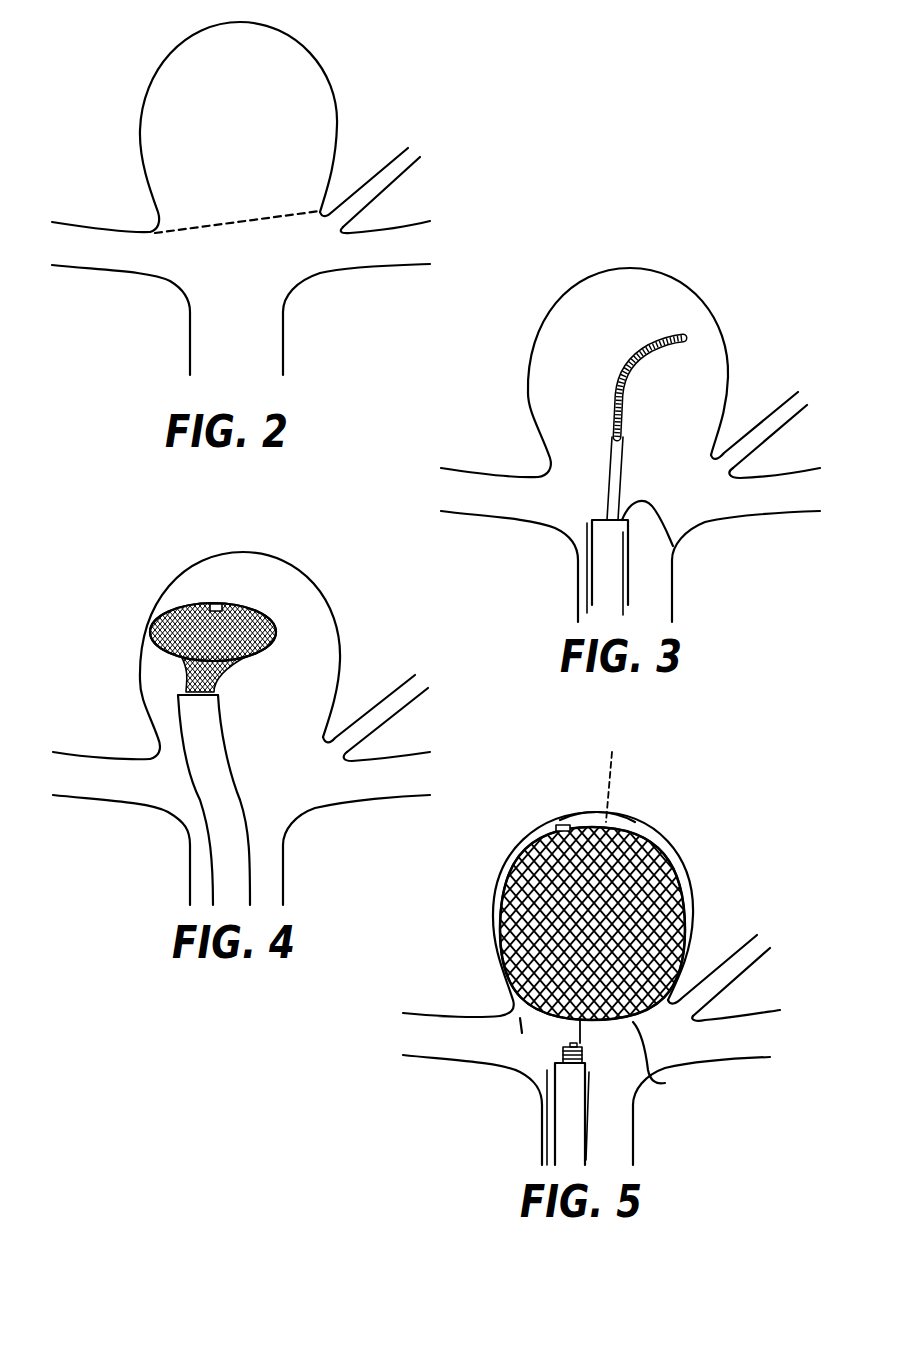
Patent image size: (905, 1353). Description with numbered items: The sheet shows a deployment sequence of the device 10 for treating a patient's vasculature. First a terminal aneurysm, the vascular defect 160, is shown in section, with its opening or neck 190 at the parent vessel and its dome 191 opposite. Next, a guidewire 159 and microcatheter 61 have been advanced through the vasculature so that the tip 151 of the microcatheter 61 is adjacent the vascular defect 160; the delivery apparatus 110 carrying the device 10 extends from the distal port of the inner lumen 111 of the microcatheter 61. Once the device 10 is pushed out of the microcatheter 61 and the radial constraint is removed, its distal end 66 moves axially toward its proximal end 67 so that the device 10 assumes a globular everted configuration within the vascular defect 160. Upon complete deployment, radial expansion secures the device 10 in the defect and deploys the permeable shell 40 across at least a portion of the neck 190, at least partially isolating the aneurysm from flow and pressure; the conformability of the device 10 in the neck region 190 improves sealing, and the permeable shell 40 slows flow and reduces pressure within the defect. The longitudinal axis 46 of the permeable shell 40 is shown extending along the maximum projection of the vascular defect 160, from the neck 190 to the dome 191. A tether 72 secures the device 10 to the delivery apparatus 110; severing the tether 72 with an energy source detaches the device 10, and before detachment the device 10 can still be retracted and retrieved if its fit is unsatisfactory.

In FIG. 4, the device 10 is at (273, 637).
In FIG. 5, the device 10 is at (502, 868).
In FIG. 4, the permeable shell 40 is at (263, 668).
In FIG. 5, the permeable shell 40 is at (502, 913).
In FIG. 5, the longitudinal axis 46 is at (613, 770).
In FIG. 3, the microcatheter 61 is at (592, 587).
In FIG. 4, the microcatheter 61 is at (250, 850).
In FIG. 5, the microcatheter 61 is at (557, 1132).
In FIG. 4, the distal end 66 is at (217, 609).
In FIG. 5, the distal end 66 is at (563, 828).
In FIG. 5, the proximal end 67 is at (665, 1083).
In FIG. 5, the tether 72 is at (582, 1050).
In FIG. 5, the delivery apparatus 110 is at (585, 1055).
In FIG. 3, the inner lumen 111 is at (673, 546).
In FIG. 3, the tip 151 is at (610, 568).
In FIG. 5, the tip 151 is at (572, 1113).
In FIG. 3, the guidewire 159 is at (627, 402).
In FIG. 2, the vascular defect 160 is at (338, 120).
In FIG. 3, the vascular defect 160 is at (727, 363).
In FIG. 4, the vascular defect 160 is at (200, 567).
In FIG. 5, the vascular defect 160 is at (628, 820).
In FIG. 2, the opening 190 is at (210, 234).
In FIG. 5, the opening 190 is at (522, 1033).
In FIG. 5, the dome 191 is at (590, 812).